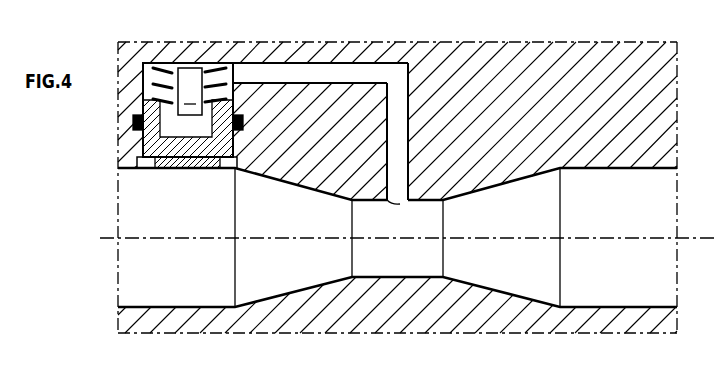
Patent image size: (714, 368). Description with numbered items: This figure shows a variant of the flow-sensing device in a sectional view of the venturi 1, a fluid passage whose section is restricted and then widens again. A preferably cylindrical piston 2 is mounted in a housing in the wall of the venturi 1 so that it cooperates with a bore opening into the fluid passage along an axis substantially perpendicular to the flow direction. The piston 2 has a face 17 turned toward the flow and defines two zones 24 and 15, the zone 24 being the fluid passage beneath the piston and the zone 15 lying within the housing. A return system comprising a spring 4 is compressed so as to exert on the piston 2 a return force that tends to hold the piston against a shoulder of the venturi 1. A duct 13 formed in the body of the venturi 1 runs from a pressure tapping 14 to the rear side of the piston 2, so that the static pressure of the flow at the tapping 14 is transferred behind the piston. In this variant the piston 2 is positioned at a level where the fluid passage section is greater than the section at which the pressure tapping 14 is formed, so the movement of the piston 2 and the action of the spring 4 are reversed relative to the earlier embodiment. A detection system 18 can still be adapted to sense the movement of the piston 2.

The venturi 1 is at (630, 72).
The piston 2 is at (143, 140).
The spring 4 is at (147, 63).
The duct 13 is at (303, 77).
The pressure tapping 14 is at (395, 203).
The zone 15 is at (150, 128).
The face 17 is at (172, 172).
The detection system 18 is at (190, 91).
The zone 24 is at (170, 248).